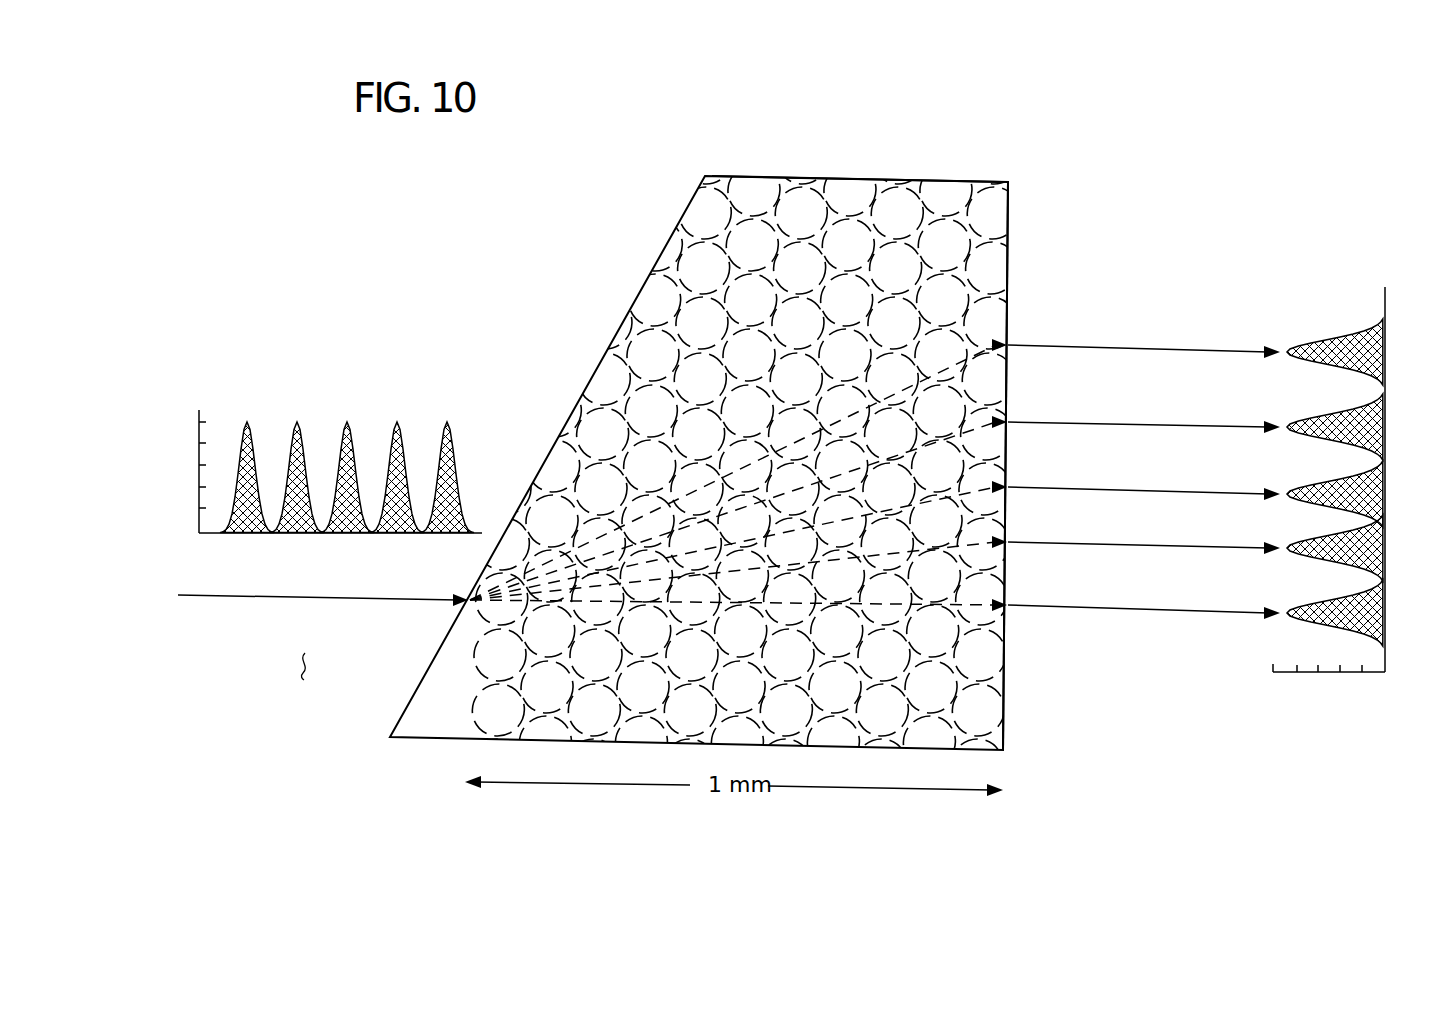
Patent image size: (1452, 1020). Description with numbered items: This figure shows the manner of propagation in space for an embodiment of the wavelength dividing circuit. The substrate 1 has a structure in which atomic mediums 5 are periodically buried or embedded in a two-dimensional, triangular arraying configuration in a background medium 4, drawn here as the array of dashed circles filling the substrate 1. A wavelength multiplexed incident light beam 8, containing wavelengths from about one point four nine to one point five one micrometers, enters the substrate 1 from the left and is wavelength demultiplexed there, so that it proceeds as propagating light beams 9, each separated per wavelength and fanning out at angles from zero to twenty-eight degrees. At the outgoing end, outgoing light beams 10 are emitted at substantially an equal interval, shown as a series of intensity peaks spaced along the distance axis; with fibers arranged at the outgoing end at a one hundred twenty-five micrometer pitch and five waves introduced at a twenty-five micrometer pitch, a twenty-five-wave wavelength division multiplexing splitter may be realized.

The substrate 1 is at (864, 116).
The background medium 4 is at (974, 189).
The atomic mediums 5 is at (998, 272).
The wavelength multiplexed incident light beam 8 is at (229, 597).
The propagating light beams 9 is at (700, 482).
The outgoing light beams 10 is at (1232, 345).